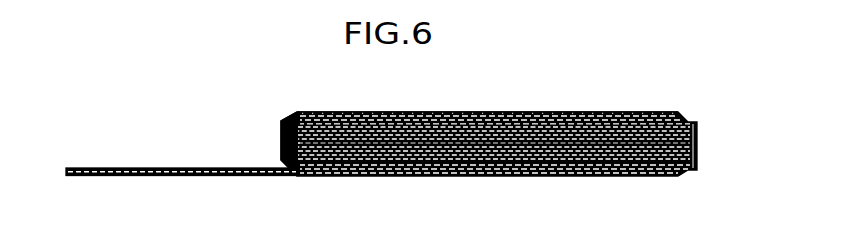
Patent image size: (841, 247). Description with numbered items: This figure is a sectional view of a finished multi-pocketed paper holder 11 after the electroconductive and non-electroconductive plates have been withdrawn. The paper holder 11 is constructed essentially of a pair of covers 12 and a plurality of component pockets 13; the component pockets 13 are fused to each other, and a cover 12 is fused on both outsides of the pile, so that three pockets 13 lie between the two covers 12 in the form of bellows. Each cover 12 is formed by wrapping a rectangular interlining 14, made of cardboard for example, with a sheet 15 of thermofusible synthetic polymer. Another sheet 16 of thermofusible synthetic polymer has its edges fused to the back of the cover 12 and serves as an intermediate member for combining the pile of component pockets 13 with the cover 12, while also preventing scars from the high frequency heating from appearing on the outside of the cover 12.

The paper holder 11 is at (635, 113).
The cover 12 is at (313, 113).
The component pocket 13 is at (282, 132).
The interlining 14 is at (377, 118).
The sheet of thermofusible synthetic polymer 15 is at (456, 122).
The sheet of thermofusible synthetic polymer 16 is at (553, 128).